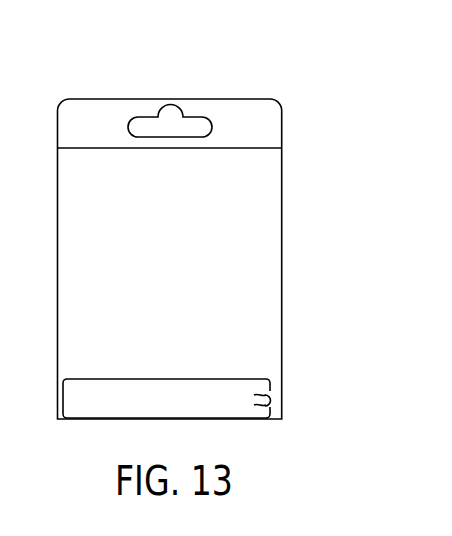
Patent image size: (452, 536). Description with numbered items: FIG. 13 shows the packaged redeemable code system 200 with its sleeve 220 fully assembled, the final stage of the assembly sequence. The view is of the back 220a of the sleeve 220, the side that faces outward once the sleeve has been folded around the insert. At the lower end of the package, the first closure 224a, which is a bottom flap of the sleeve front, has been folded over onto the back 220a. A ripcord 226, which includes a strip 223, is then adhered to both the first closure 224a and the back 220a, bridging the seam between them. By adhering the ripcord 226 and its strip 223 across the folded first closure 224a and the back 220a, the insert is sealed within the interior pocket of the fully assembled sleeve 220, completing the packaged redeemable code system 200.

The packaged redeemable code system 200 is at (108, 96).
The sleeve 220 is at (80, 166).
The back 220a is at (185, 262).
The strip 223 is at (113, 398).
The ripcord 226 is at (269, 392).
The first closure 224a is at (268, 410).